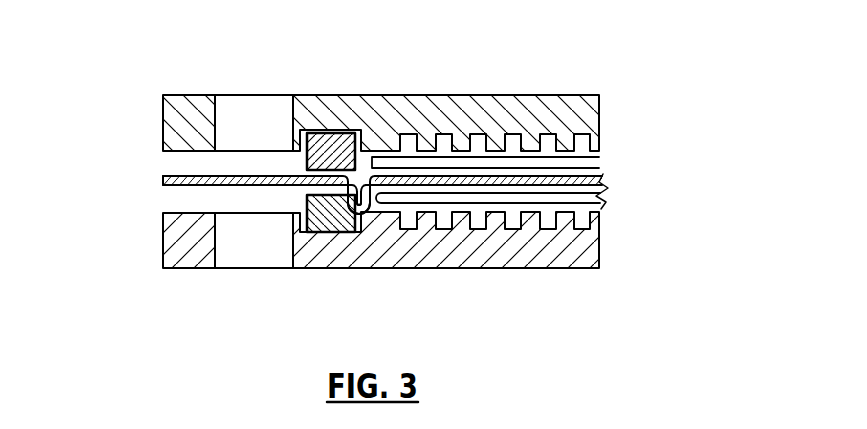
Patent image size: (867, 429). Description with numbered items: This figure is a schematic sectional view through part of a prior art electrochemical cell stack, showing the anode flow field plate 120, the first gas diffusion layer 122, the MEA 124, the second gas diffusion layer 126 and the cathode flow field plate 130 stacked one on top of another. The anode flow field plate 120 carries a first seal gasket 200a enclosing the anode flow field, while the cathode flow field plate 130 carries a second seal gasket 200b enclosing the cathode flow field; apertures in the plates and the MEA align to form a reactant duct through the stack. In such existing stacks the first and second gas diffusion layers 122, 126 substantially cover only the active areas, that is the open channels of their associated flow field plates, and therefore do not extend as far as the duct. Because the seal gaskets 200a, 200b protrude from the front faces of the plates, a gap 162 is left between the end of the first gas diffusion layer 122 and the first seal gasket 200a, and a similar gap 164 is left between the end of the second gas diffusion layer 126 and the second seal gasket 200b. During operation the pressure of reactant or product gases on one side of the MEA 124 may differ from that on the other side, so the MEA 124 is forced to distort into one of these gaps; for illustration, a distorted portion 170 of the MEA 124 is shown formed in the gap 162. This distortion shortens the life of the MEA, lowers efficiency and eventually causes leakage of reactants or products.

The anode flow field plate 120 is at (164, 256).
The first gas diffusion layer 122 is at (600, 201).
The MEA 124 is at (168, 178).
The second gas diffusion layer 126 is at (598, 178).
The cathode flow field plate 130 is at (503, 112).
The gap 162 is at (363, 209).
The gap 164 is at (369, 157).
The distorted portion 170 is at (353, 185).
The first seal gasket 200a is at (323, 222).
The second seal gasket 200b is at (337, 147).